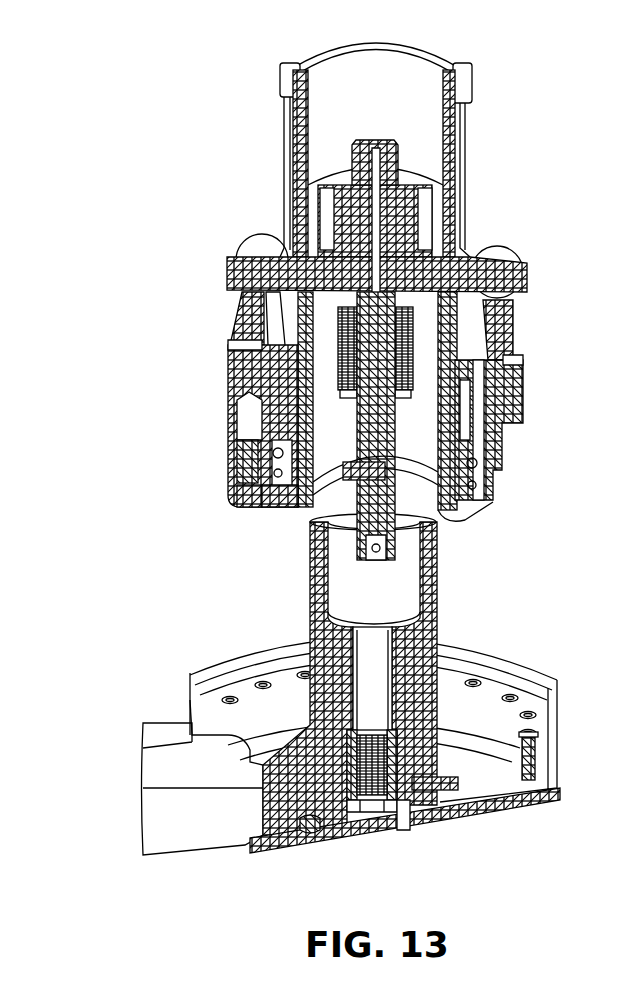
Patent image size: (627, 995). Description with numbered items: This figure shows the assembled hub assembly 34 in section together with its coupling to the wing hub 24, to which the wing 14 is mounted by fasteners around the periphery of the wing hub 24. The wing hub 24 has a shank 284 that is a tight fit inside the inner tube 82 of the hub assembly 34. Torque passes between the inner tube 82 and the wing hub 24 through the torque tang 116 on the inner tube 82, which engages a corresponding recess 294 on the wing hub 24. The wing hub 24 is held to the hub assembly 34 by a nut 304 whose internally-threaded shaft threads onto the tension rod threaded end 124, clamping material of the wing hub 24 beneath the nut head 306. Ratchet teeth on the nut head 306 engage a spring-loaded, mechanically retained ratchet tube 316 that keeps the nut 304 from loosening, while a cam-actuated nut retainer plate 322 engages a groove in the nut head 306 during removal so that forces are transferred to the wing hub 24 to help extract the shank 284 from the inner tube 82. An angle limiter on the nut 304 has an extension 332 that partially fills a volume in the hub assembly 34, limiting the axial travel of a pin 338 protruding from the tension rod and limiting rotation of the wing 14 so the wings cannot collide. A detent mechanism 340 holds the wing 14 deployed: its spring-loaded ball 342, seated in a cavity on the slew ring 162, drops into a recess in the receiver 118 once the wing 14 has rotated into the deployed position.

The wing 14 is at (175, 833).
The wing hub 24 is at (366, 759).
The hub assembly 34 is at (316, 315).
The inner tube 82 is at (450, 147).
The torque tang 116 is at (235, 492).
The receiver 118 is at (252, 500).
The tension rod threaded end 124 is at (407, 530).
The slew ring 162 is at (227, 395).
The shank 284 is at (423, 580).
The recess 294 is at (245, 722).
The nut 304 is at (408, 818).
The nut head 306 is at (410, 803).
The ratchet tube 316 is at (310, 830).
The nut retainer plate 322 is at (480, 765).
The extension 332 is at (380, 683).
The pin 338 is at (318, 480).
The detent mechanism 340 is at (192, 426).
The spring-loaded ball 342 is at (235, 460).